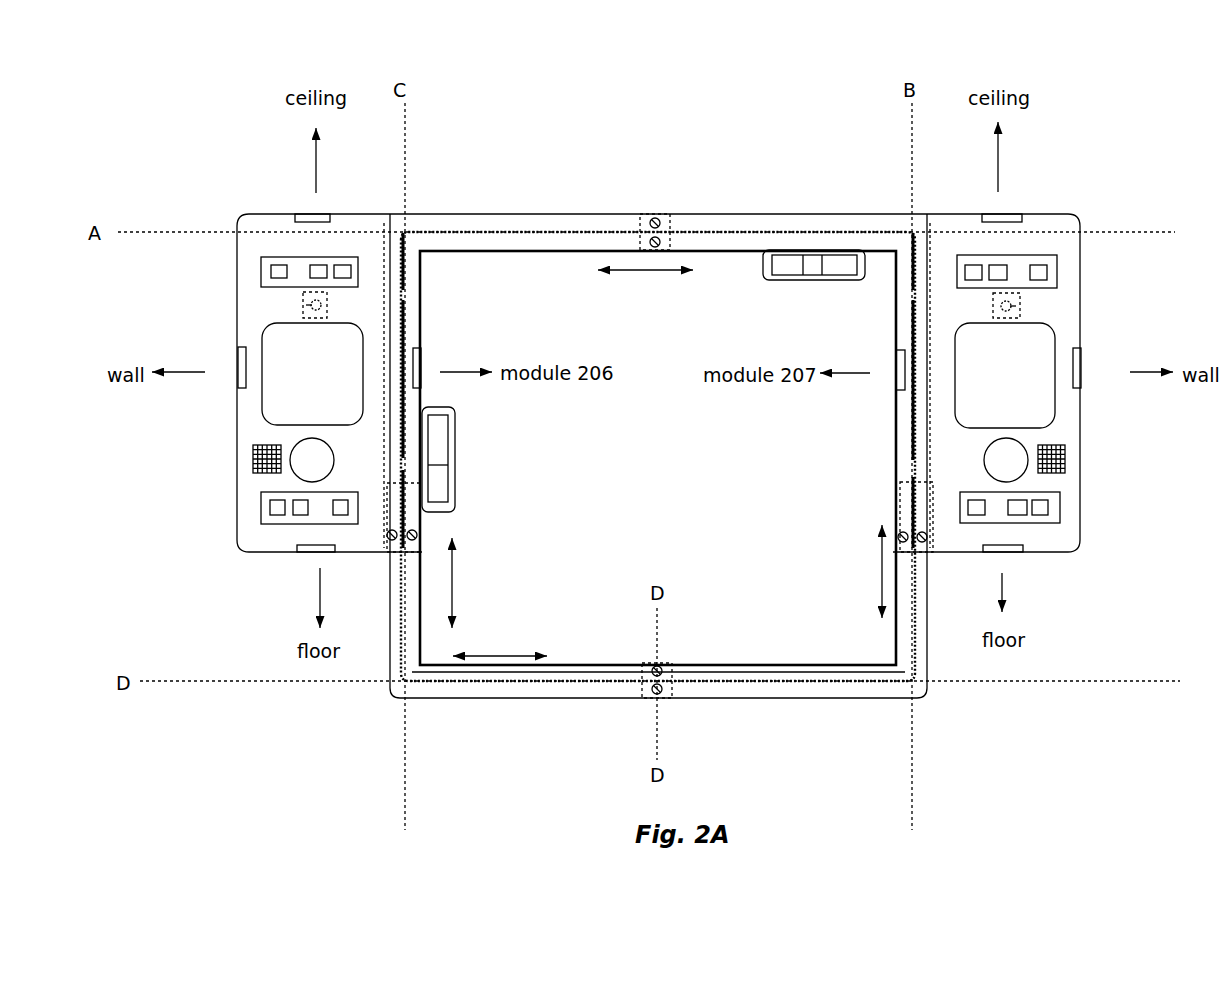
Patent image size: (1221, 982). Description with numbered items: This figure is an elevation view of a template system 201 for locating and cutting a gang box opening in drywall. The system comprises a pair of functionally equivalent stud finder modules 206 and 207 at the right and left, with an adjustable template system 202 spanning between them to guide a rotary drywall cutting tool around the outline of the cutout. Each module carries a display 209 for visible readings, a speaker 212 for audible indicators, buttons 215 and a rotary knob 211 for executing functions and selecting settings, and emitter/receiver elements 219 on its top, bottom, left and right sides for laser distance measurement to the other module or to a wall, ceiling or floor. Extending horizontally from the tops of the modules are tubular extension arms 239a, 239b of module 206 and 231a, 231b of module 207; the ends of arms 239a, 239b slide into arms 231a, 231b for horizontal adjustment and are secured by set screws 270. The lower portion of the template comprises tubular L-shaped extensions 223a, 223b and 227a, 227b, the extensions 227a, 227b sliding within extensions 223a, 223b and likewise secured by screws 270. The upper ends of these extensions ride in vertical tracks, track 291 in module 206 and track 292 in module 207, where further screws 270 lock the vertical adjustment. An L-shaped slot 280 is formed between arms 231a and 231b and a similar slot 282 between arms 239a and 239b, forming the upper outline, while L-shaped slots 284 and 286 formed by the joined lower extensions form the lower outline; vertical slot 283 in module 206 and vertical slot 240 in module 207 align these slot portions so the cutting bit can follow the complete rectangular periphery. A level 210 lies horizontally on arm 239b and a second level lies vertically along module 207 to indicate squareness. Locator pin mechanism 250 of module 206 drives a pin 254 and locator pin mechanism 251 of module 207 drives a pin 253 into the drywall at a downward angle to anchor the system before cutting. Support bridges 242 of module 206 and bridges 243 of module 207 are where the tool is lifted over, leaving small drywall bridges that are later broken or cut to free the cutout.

The template system 201 is at (697, 125).
The adjustable template system 202 is at (778, 213).
The stud finder module 206 is at (1087, 330).
The stud finder module 207 is at (232, 330).
The display 209 is at (262, 408).
The level 210 is at (810, 281).
The rotary knob 211 is at (1006, 482).
The speaker 212 is at (456, 422).
The buttons 215 is at (290, 257).
The emitter/receiver element 219 is at (423, 357).
The L-shaped extension 223a is at (827, 705).
The L-shaped extension 223b is at (810, 664).
The L-shaped extension 227a is at (518, 703).
The L-shaped extension 227b is at (600, 664).
The extension arm 231a is at (537, 251).
The extension arm 231b is at (537, 251).
The extension arm 239a is at (808, 214).
The extension arm 239b is at (735, 252).
The vertical slot 240 is at (410, 326).
The support bridge 242 is at (905, 297).
The support bridge 243 is at (392, 297).
The locator pin mechanism 250 is at (995, 307).
The locator pin mechanism 251 is at (302, 307).
The pin 253 is at (326, 306).
The pin 254 is at (1020, 307).
The set screw 270 is at (655, 218).
The L-shaped slot 280 is at (600, 223).
The L-shaped slot 282 is at (682, 225).
The vertical slot 283 is at (905, 423).
The L-shaped slot 284 is at (887, 687).
The L-shaped slot 286 is at (585, 686).
The track 291 is at (930, 465).
The track 292 is at (390, 440).